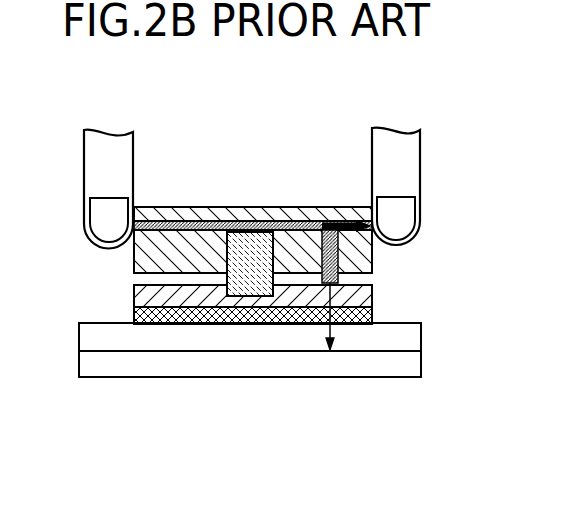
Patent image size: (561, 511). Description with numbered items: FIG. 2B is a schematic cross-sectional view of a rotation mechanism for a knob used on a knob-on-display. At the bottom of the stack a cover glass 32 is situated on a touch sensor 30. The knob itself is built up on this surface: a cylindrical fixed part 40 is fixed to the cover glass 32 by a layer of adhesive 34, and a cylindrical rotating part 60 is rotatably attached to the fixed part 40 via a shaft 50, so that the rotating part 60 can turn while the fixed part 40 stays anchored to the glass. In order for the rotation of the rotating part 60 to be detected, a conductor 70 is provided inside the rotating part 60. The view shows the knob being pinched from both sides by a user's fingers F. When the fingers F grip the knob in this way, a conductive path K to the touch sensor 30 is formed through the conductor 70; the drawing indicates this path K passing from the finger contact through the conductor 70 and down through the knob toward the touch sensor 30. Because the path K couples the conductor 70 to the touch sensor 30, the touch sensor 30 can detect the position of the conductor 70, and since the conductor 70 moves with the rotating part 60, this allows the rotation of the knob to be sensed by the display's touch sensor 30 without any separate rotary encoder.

The touch sensor 30 is at (79, 362).
The cover glass 32 is at (79, 336).
The adhesive 34 is at (134, 318).
The fixed part 40 is at (372, 298).
The shaft 50 is at (250, 207).
The rotating part 60 is at (372, 263).
The conductor 70 is at (187, 207).
The conductive path K is at (334, 207).
The fingers F is at (84, 174).